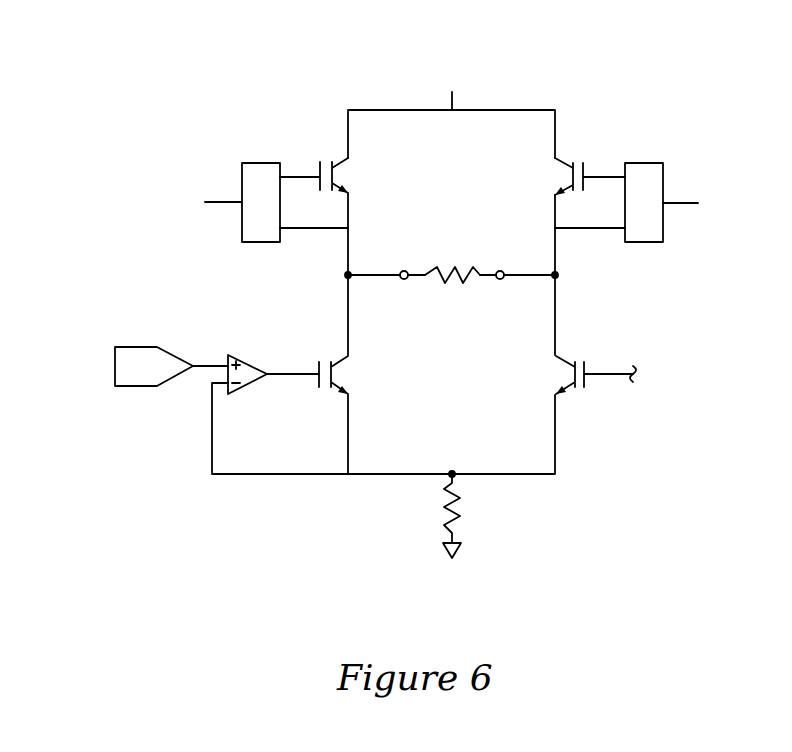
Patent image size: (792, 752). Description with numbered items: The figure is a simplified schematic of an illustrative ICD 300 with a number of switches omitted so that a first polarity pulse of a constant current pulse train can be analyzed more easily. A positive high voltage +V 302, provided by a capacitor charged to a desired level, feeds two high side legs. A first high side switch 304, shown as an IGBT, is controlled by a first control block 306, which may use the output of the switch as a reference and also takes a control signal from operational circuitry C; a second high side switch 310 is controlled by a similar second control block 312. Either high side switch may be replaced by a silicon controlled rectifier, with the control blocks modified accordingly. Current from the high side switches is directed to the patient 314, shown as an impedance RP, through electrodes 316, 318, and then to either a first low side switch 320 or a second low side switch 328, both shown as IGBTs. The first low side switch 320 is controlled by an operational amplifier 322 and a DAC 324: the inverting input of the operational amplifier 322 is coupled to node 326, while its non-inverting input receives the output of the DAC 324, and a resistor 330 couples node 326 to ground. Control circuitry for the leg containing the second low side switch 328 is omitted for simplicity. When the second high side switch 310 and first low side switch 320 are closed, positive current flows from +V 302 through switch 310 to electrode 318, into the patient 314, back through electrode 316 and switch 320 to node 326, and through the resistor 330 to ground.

The ICD 300 is at (318, 76).
The positive high voltage +V 302 is at (469, 79).
The first high side switch 304 is at (352, 166).
The first control block 306 is at (262, 162).
The second high side switch 310 is at (574, 145).
The second control block 312 is at (650, 242).
The patient 314 is at (465, 282).
The electrode 316 is at (406, 270).
The electrode 318 is at (499, 281).
The first low side switch 320 is at (325, 361).
The operational amplifier 322 is at (250, 354).
The DAC 324 is at (135, 387).
The node 326 is at (453, 472).
The second low side switch 328 is at (580, 361).
The resistor 330 is at (457, 512).